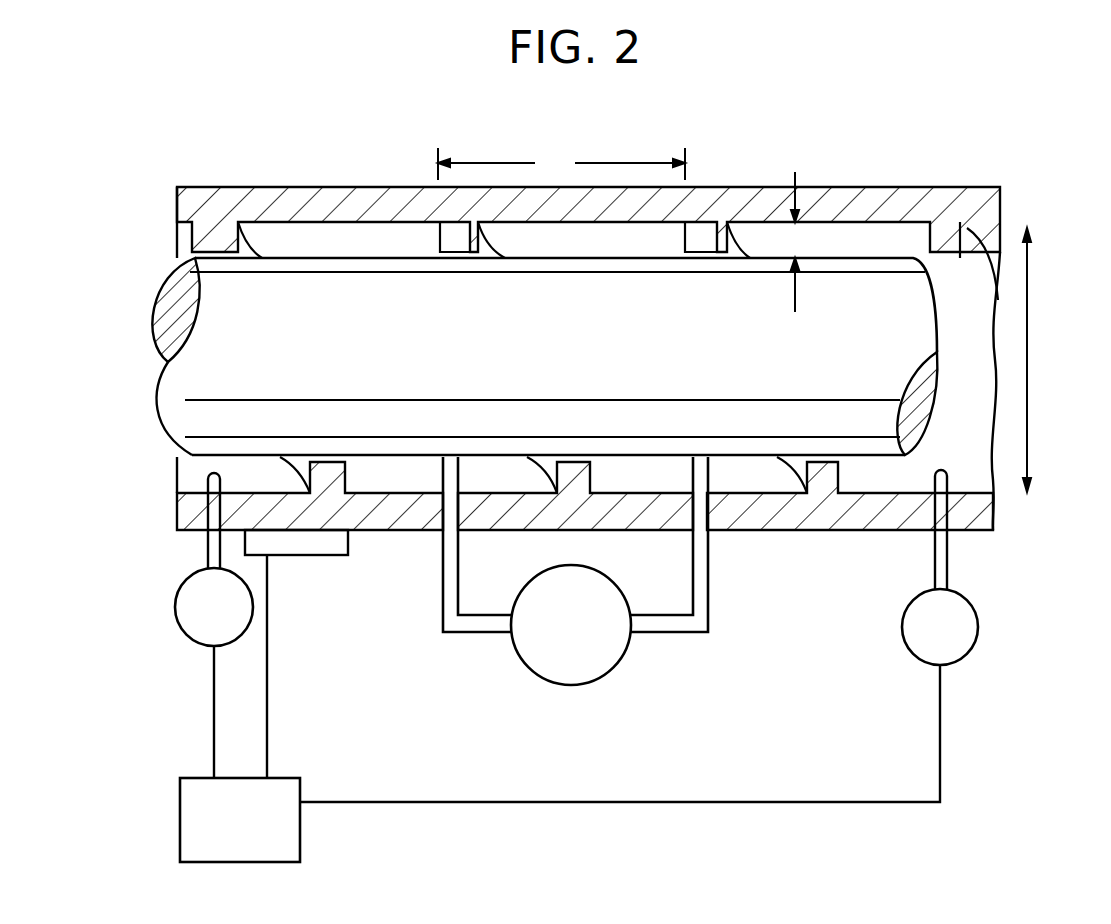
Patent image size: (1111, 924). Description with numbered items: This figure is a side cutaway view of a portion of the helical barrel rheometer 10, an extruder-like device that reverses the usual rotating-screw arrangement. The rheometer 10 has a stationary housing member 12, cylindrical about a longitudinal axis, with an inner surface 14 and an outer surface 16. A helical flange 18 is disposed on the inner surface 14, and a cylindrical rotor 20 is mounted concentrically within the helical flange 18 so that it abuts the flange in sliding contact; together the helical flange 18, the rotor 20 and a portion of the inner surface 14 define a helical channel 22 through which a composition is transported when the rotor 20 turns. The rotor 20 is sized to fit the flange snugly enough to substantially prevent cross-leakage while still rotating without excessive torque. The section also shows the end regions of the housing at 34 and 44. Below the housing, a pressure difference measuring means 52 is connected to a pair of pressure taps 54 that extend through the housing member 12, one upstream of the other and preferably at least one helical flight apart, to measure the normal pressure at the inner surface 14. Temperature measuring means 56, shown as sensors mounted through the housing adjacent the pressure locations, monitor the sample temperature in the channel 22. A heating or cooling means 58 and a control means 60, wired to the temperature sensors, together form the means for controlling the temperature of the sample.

The helical barrel rheometer 10 is at (108, 118).
The housing member 12 is at (888, 210).
The inner surface 14 is at (963, 490).
The outer surface 16 is at (863, 187).
The helical flange 18 is at (232, 248).
The rotor 20 is at (190, 413).
The helical channel 22 is at (397, 243).
The end wall 34 is at (178, 187).
The end wall 44 is at (1000, 190).
The pressure difference measuring means 52 is at (483, 655).
The pressure taps 54 is at (705, 550).
The temperature measuring means 56 is at (152, 585).
The heating or cooling means 58 is at (297, 556).
The control means 60 is at (283, 834).